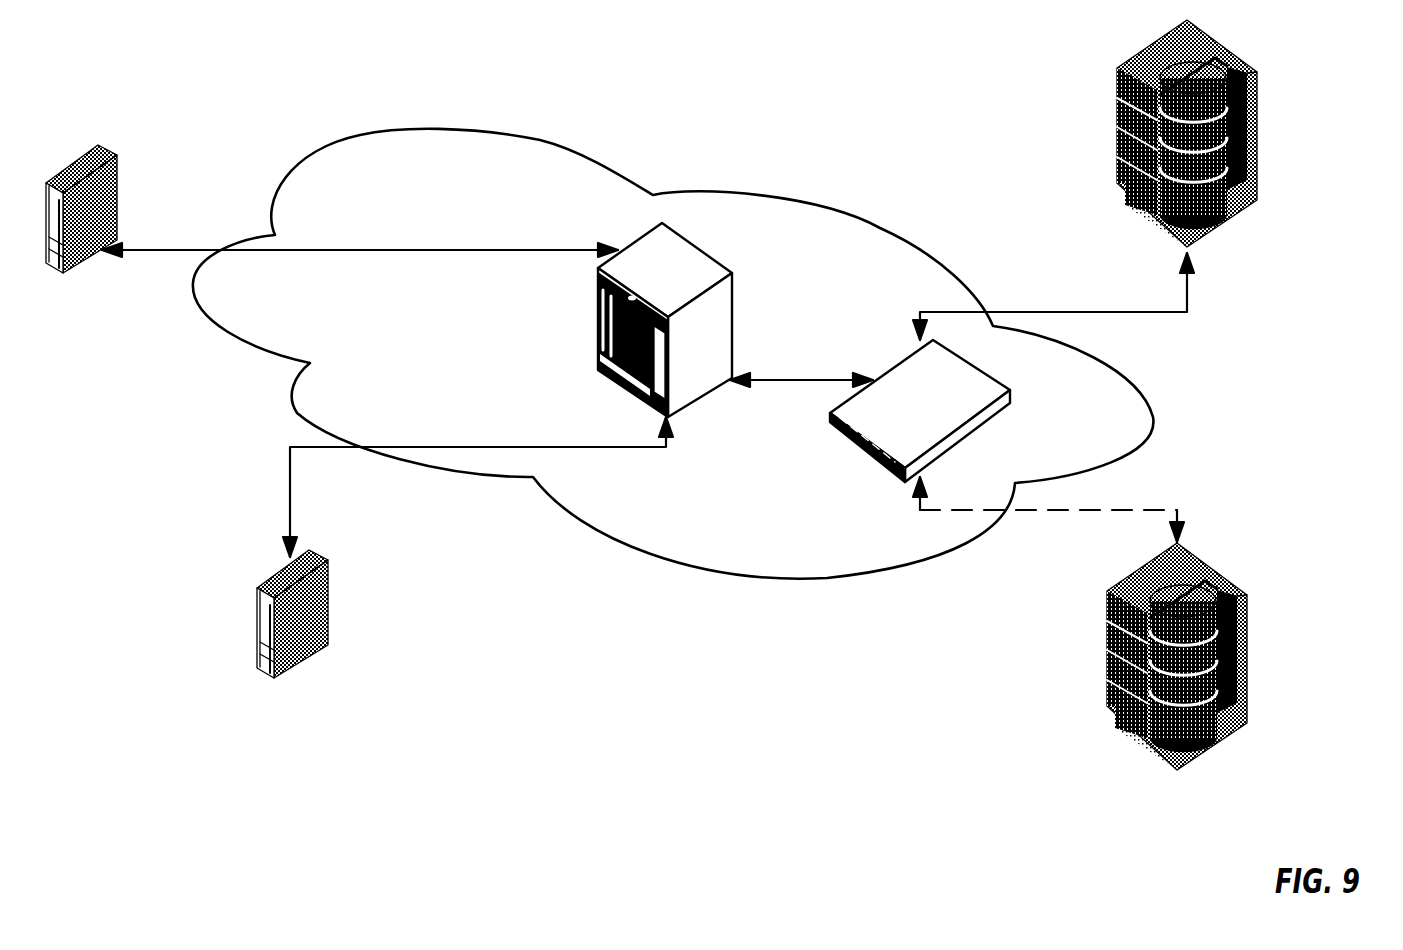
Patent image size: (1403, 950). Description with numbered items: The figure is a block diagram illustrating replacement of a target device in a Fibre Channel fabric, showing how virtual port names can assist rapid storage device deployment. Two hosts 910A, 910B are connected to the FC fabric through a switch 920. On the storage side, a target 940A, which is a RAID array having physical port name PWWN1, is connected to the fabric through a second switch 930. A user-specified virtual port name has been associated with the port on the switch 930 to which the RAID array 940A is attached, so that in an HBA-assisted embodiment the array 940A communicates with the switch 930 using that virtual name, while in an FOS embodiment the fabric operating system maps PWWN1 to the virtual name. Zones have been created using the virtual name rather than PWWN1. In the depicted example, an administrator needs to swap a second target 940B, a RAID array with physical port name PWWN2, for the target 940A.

The host 910A is at (120, 265).
The host 910B is at (341, 633).
The switch 920 is at (734, 299).
The switch 930 is at (1029, 405).
The target 940A is at (1256, 133).
The target 940B is at (1223, 629).